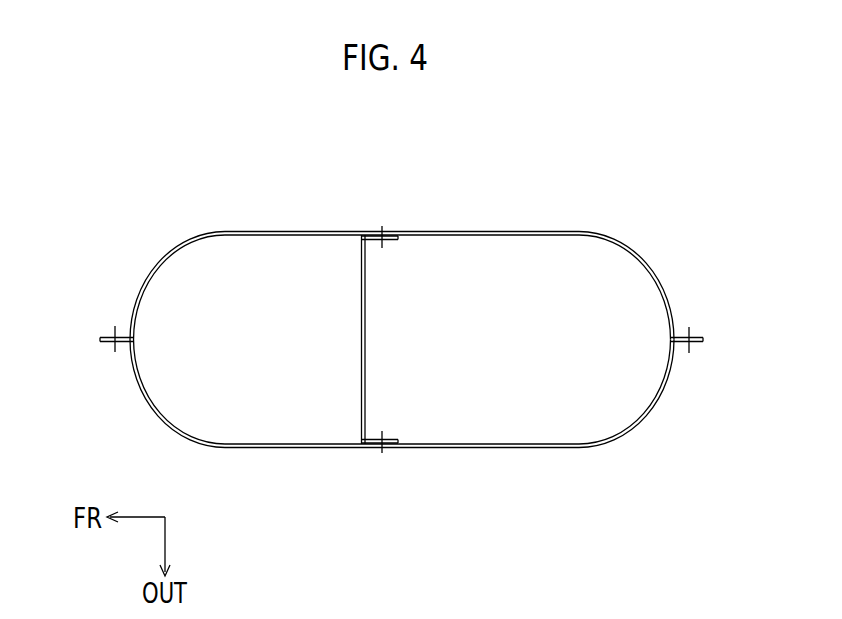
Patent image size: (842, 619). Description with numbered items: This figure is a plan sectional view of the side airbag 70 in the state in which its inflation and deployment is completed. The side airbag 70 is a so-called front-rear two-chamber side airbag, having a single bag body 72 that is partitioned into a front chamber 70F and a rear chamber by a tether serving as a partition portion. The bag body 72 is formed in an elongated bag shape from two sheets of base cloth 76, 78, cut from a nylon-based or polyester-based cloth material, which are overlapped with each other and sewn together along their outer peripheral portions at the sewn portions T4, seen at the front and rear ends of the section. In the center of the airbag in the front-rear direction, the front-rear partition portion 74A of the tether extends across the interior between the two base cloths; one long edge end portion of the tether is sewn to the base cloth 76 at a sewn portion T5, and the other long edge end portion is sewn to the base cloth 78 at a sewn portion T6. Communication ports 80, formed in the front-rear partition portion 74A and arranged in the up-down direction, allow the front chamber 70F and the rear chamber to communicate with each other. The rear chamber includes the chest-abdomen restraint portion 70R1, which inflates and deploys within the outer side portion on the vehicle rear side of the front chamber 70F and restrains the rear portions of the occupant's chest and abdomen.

The side airbag 70 is at (420, 330).
The bag body 72 is at (505, 226).
The base cloth 78 is at (641, 247).
The base cloth 76 is at (650, 420).
The front chamber 70F is at (267, 449).
The chest-abdomen restraint portion 70R1 is at (538, 449).
The front-rear partition portion 74A is at (429, 340).
The sewn portion T6 is at (381, 226).
The sewn portion T5 is at (382, 454).
The sewn portions T4 is at (110, 334).
The communication ports 80 is at (360, 347).